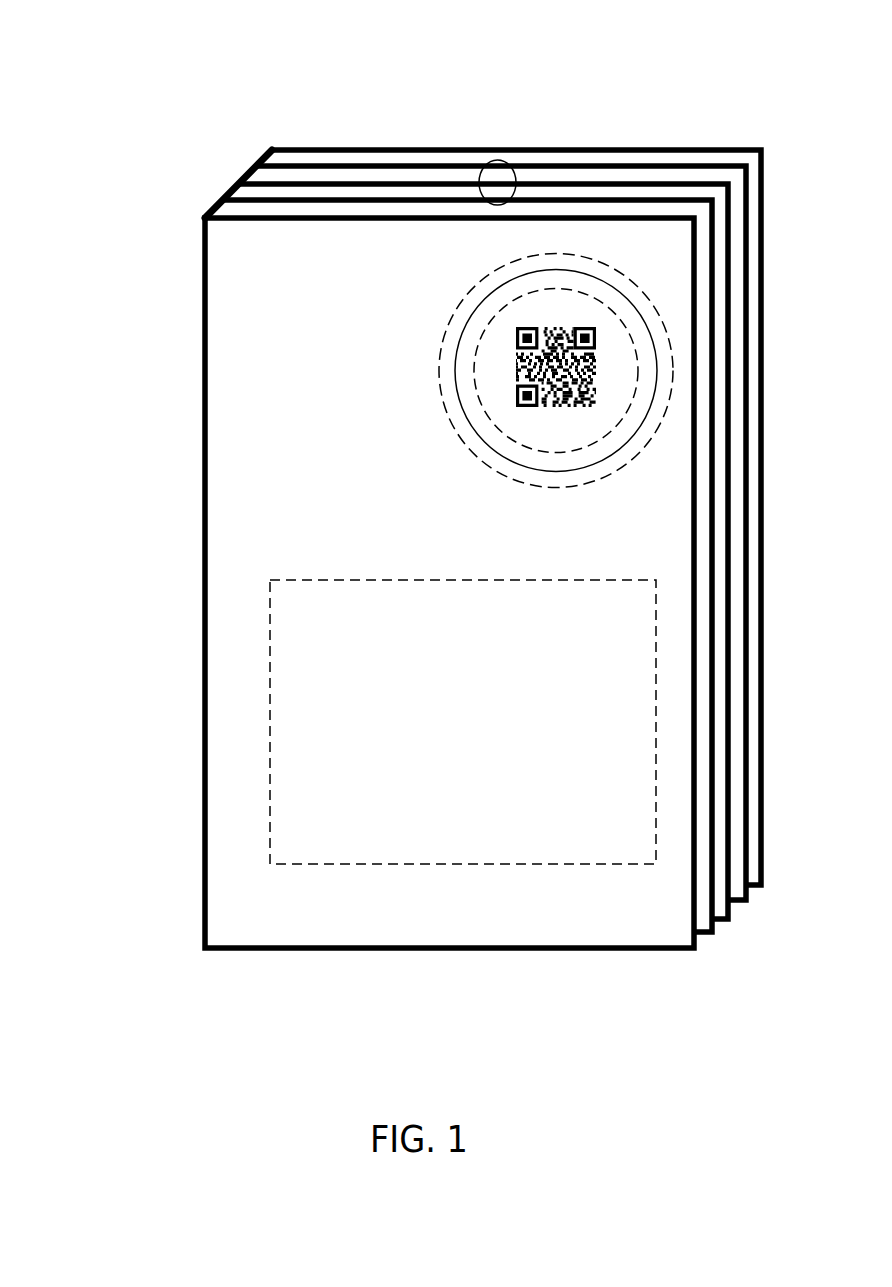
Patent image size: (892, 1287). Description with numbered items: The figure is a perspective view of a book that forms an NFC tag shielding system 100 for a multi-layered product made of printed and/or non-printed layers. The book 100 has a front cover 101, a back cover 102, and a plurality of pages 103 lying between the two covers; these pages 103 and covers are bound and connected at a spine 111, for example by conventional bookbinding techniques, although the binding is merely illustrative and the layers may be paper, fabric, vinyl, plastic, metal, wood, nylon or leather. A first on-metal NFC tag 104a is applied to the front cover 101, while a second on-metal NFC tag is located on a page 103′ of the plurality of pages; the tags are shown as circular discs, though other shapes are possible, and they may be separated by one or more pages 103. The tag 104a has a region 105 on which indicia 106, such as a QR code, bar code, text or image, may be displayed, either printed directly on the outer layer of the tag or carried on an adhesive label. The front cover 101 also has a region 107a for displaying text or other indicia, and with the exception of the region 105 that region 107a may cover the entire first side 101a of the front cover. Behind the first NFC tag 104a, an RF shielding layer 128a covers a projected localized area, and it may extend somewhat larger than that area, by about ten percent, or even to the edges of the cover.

The NFC tag shielding system 100 is at (214, 126).
The front cover 101 is at (280, 218).
The first side of the front cover 101a is at (255, 295).
The back cover 102 is at (388, 150).
The pages 103 is at (502, 163).
The page 103′ is at (552, 197).
The first on-metal NFC tag 104a is at (483, 440).
The region 105 is at (592, 442).
The indicia 106 is at (563, 407).
The region for displaying text or other indicia 107a is at (270, 688).
The spine 111 is at (212, 203).
The RF shielding layer 128a is at (445, 413).